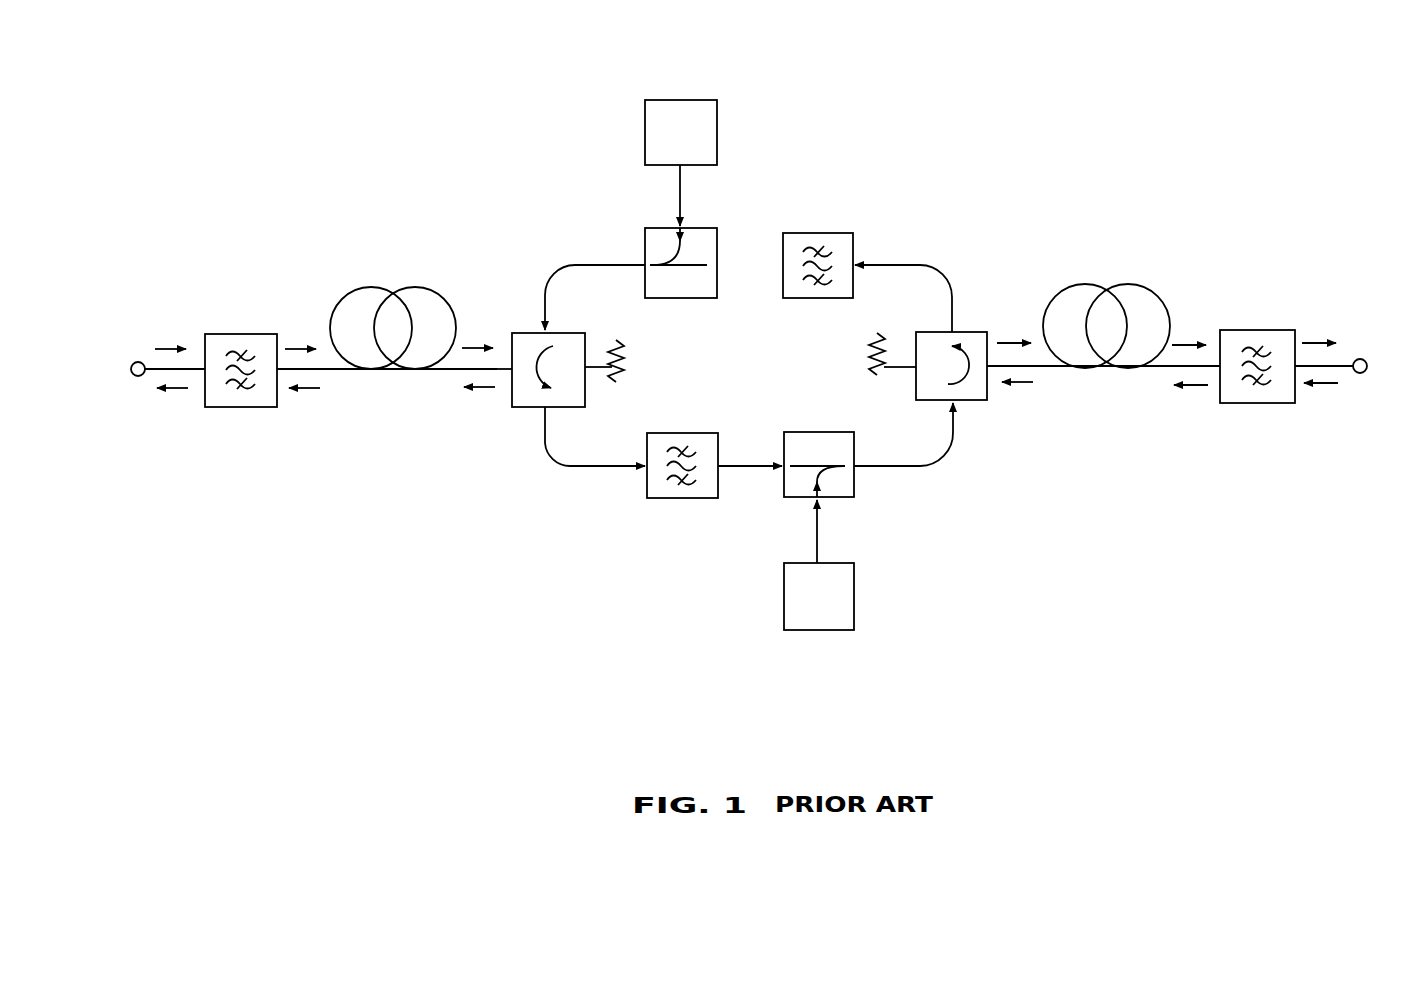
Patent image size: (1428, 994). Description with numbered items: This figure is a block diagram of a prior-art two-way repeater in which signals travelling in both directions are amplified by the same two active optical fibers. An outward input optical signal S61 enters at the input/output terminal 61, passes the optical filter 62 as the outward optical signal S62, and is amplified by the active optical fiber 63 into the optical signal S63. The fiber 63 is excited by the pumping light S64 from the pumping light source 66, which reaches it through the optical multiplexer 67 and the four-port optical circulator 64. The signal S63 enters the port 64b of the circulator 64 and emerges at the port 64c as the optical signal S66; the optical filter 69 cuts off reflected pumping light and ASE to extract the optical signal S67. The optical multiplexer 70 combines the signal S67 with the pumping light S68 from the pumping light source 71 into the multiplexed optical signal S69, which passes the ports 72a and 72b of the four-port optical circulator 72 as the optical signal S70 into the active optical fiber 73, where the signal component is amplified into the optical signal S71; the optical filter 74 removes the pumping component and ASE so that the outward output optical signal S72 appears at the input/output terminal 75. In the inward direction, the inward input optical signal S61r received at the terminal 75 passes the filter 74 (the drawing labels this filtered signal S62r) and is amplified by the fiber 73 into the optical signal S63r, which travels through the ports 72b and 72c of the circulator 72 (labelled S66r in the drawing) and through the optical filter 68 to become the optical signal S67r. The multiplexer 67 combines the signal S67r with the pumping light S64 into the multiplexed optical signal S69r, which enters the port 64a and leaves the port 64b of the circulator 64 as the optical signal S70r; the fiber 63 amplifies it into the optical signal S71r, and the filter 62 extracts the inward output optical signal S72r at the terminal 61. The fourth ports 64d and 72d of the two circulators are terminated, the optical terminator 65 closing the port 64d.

The input/output terminal 61 is at (133, 376).
The optical filter 62 is at (240, 334).
The active optical fiber 63 is at (372, 287).
The four-port optical circulator 64 is at (522, 407).
The port 64a is at (550, 332).
The port 64b is at (507, 377).
The port 64c is at (545, 407).
The fourth port 64d is at (593, 370).
The optical terminator 65 is at (622, 362).
The pumping light source 66 is at (663, 100).
The optical multiplexer 67 is at (697, 227).
The optical filter 68 is at (820, 233).
The optical filter 69 is at (682, 498).
The optical multiplexer 70 is at (855, 480).
The pumping light source 71 is at (820, 630).
The four-port optical circulator 72 is at (972, 332).
The port 72a is at (957, 400).
The port 72b is at (990, 375).
The port 72c is at (953, 330).
The fourth port 72d is at (915, 353).
The active optical fiber 73 is at (1088, 285).
The optical filter 74 is at (1238, 403).
The input/output terminal 75 is at (1367, 368).
The outward input optical signal S61 is at (170, 348).
The outward optical signal S62 is at (300, 348).
The optical signal S63 is at (480, 346).
The pumping light S64 is at (677, 193).
The optical signal S66 is at (570, 472).
The optical signal S67 is at (740, 468).
The pumping light S68 is at (818, 540).
The multiplexed optical signal S69 is at (922, 466).
The optical signal S70 is at (1020, 343).
The optical signal S71 is at (1190, 343).
The outward output optical signal S72 is at (1320, 343).
The inward input optical signal S61r is at (1318, 385).
The reflected optical signal S62r is at (1195, 387).
The optical signal S63r is at (1017, 383).
The reflected optical signal S66r is at (895, 262).
The optical signal S67r is at (753, 263).
The multiplexed optical signal S69r is at (598, 267).
The optical signal S70r is at (480, 389).
The optical signal S71r is at (305, 390).
The inward output optical signal S72r is at (172, 390).